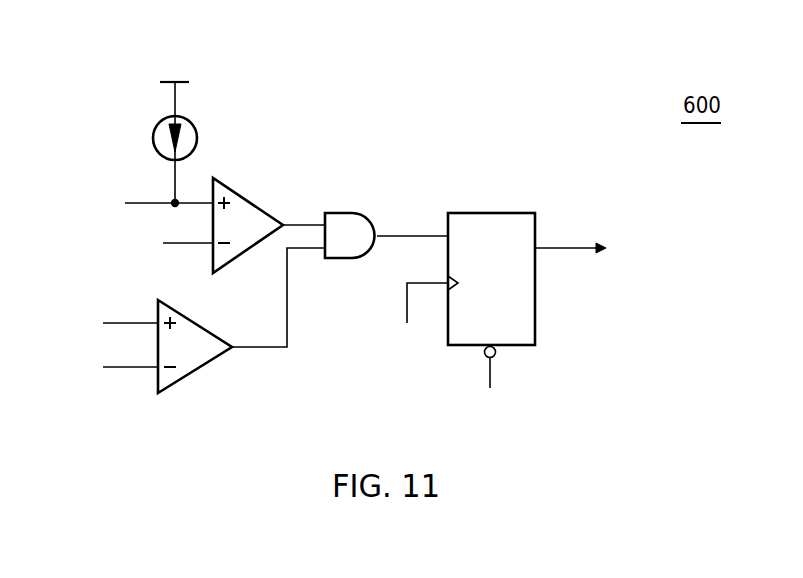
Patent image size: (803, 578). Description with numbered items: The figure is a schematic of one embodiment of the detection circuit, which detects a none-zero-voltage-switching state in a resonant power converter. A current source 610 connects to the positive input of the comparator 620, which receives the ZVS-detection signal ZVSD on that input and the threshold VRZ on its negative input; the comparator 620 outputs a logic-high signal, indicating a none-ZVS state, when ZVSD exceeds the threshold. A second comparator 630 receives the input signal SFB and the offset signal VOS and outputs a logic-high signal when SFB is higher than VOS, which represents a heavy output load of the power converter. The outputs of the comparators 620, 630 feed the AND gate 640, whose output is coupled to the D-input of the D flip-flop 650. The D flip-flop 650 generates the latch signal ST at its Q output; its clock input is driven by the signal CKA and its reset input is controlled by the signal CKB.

The current source 610 is at (196, 120).
The comparator 620 is at (242, 187).
The comparator 630 is at (208, 323).
The AND gate 640 is at (335, 210).
The D flip-flop 650 is at (483, 212).